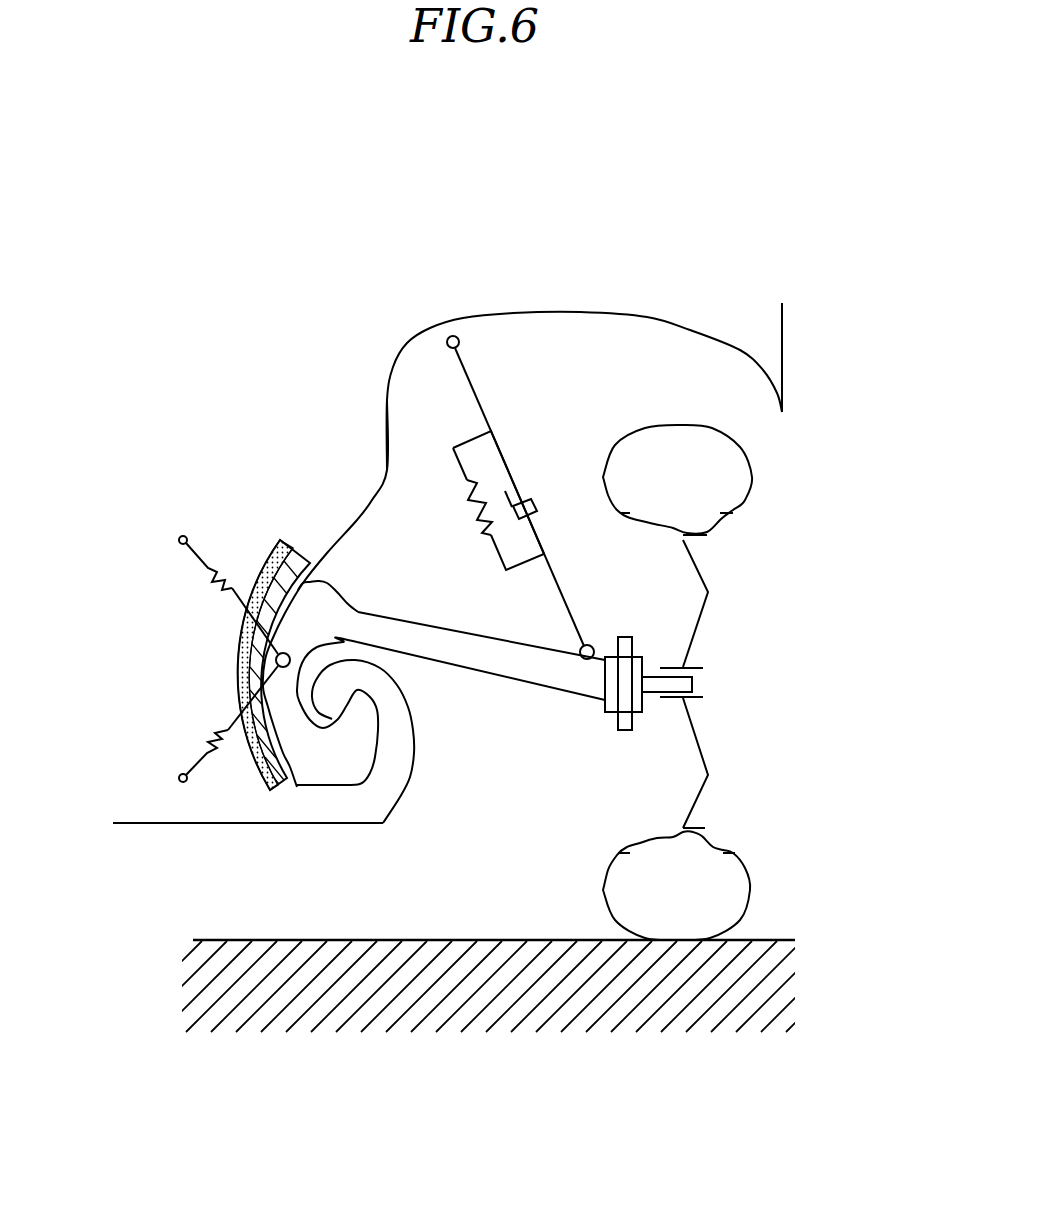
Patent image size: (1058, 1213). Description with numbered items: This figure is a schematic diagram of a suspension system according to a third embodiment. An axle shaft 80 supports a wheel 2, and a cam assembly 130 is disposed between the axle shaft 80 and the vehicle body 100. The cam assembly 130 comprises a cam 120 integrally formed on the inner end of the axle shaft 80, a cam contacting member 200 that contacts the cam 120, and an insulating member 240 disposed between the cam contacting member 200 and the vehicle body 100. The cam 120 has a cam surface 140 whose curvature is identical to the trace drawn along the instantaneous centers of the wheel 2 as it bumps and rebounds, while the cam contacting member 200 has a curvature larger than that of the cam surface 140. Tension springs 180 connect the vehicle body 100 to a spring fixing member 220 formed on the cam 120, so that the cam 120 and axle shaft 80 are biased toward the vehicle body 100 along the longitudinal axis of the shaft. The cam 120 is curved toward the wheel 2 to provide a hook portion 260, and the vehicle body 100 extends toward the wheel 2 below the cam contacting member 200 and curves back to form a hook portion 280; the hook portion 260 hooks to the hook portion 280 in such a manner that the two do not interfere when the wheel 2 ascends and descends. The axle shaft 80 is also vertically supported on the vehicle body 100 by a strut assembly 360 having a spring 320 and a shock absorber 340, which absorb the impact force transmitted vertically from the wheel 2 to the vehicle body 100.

The wheel 2 is at (753, 565).
The axle shaft 80 is at (545, 665).
The vehicle body 100 is at (770, 342).
The cam 120 is at (350, 572).
The cam assembly 130 is at (224, 539).
The cam surface 140 is at (283, 550).
The tension springs 180 is at (220, 583).
The cam contacting member 200 is at (297, 790).
The spring fixing member 220 is at (276, 661).
The insulating member 240 is at (268, 762).
The hook portion 260 is at (355, 733).
The hook portion 280 is at (387, 688).
The spring 320 is at (467, 500).
The shock absorber 340 is at (533, 467).
The strut assembly 360 is at (593, 407).